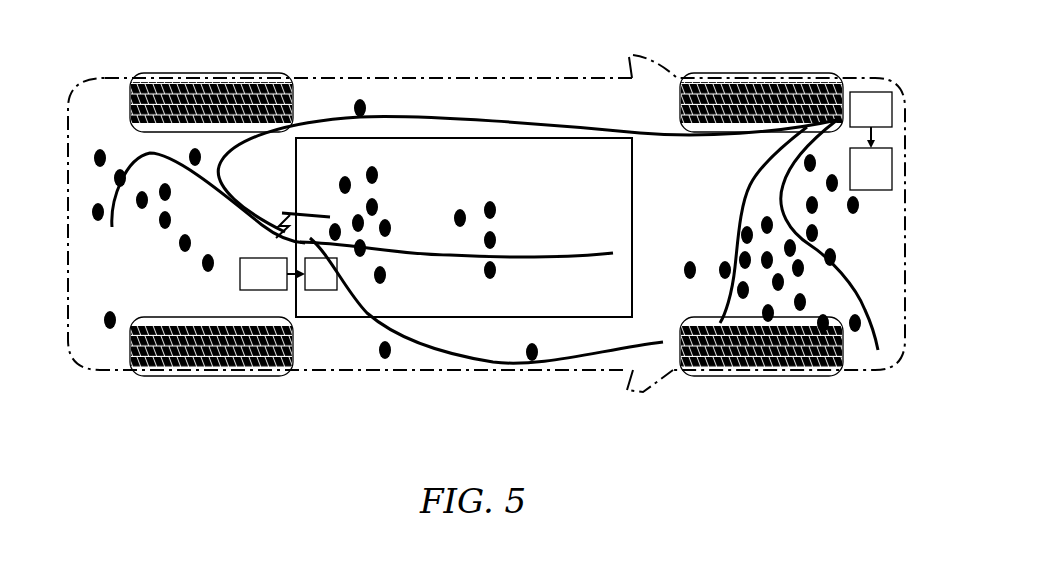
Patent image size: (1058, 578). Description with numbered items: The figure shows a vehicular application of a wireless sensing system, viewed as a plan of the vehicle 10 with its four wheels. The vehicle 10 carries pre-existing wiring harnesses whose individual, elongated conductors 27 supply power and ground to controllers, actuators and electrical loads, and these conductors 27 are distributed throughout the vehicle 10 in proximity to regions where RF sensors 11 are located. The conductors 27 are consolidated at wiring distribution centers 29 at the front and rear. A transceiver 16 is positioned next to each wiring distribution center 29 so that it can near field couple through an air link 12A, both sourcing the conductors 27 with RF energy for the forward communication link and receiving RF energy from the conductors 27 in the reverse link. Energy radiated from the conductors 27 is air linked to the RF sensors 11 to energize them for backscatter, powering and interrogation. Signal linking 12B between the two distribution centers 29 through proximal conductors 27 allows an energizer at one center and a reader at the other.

The vehicle 10 is at (497, 77).
The RF sensors 11 is at (476, 277).
The air link 12A is at (284, 290).
The signal linking 12B is at (282, 225).
The transceiver 16 is at (245, 258).
The conductors 27 is at (561, 123).
The wiring distribution center 29 is at (323, 290).